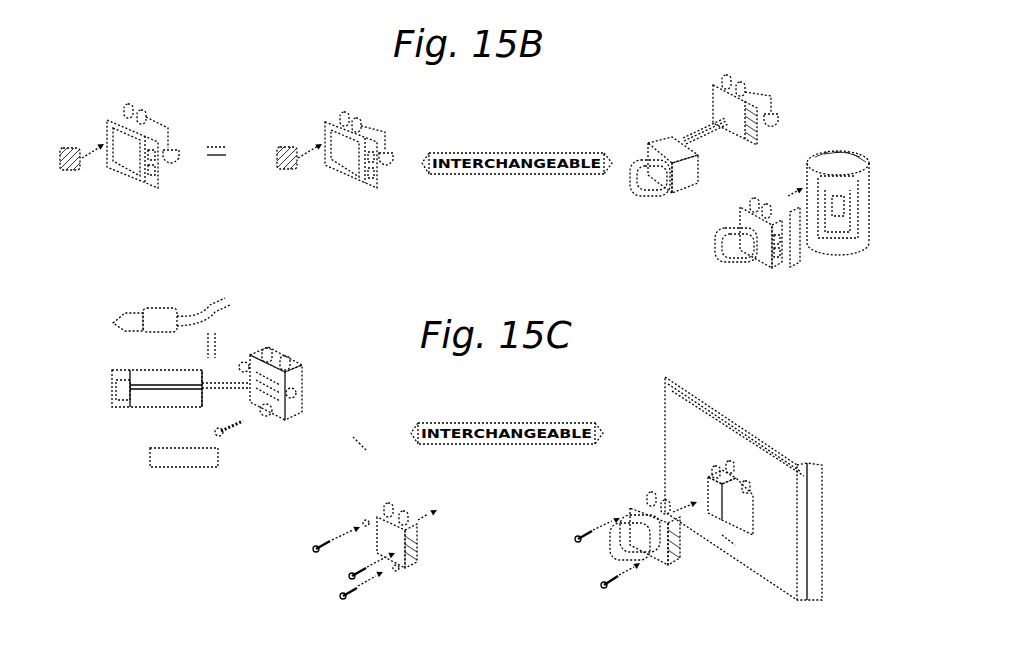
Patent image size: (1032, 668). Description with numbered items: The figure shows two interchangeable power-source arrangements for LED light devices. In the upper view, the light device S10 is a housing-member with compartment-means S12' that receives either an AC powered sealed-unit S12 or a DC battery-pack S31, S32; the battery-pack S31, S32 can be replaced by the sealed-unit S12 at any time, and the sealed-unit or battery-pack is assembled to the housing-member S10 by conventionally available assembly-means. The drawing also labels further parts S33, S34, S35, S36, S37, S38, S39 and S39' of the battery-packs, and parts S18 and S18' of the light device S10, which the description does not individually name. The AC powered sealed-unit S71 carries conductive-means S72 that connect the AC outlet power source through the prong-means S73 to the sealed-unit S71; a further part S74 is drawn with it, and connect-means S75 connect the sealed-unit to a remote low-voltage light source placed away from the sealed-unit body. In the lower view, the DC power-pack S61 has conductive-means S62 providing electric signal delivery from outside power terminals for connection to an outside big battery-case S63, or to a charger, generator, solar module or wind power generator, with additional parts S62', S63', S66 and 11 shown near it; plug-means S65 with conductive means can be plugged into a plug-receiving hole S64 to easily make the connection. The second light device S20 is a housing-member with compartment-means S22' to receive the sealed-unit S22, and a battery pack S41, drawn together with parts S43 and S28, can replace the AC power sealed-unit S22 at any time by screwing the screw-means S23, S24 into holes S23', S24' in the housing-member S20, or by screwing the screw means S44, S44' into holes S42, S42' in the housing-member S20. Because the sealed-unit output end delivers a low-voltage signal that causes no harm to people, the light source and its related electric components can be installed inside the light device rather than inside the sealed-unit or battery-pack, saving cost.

In FIG. 15B, the battery-pack S31 is at (358, 145).
In FIG. 15B, the battery-pack S32 is at (119, 143).
In FIG. 15B, the sensor frame S33 is at (319, 144).
In FIG. 15B, the side slots S34 is at (343, 175).
In FIG. 15B, the sensor element S35 is at (285, 150).
In FIG. 15B, the terminal pin S36 is at (323, 107).
In FIG. 15B, the side slots S37 is at (125, 175).
In FIG. 15B, the sensor element S38 is at (68, 151).
In FIG. 15B, the terminal pin S39 is at (358, 109).
In FIG. 15B, the lead wire connector S39' is at (397, 142).
In FIG. 15B, the sealed-unit S71 is at (714, 99).
In FIG. 15B, the conductive-means S72 is at (698, 121).
In FIG. 15B, the prong-means S73 is at (650, 195).
In FIG. 15B, the connector housing S74 is at (696, 165).
In FIG. 15B, the connect-means S75 is at (750, 90).
In FIG. 15B, the light device S10 is at (862, 212).
In FIG. 15B, the sealed-unit S12 is at (759, 244).
In FIG. 15B, the compartment-means S12' is at (839, 236).
In FIG. 15B, the receiving pocket S18 is at (838, 174).
In FIG. 15B, the inner slot S18' is at (835, 237).
In FIG. 15C, the DC power-pack S61 is at (293, 383).
In FIG. 15C, the conductive-means S62 is at (268, 411).
In FIG. 15C, the cable S62' is at (211, 304).
In FIG. 15C, the battery-case S63 is at (181, 370).
In FIG. 15C, the plug S63' is at (145, 305).
In FIG. 15C, the plug-receiving hole S64 is at (315, 404).
In FIG. 15C, the plug-means S65 is at (210, 423).
In FIG. 15C, the base plate S66 is at (184, 469).
In FIG. 15C, the piston 11 is at (135, 403).
In FIG. 15C, the battery pack S41 is at (378, 519).
In FIG. 15C, the hole S42 is at (346, 513).
In FIG. 15C, the hole S42' is at (403, 584).
In FIG. 15C, the terminal pins S43 is at (402, 498).
In FIG. 15C, the screw means S44 is at (323, 535).
In FIG. 15C, the screw means S44' is at (353, 566).
In FIG. 15C, the light device S20 is at (755, 488).
In FIG. 15C, the sealed-unit S22 is at (653, 513).
In FIG. 15C, the compartment-means S22' is at (786, 498).
In FIG. 15C, the screw-means S23 is at (620, 589).
In FIG. 15C, the hole S23' is at (644, 555).
In FIG. 15C, the screw-means S24 is at (583, 525).
In FIG. 15C, the hole S24' is at (605, 501).
In FIG. 15C, the mounting rails S28 is at (736, 423).